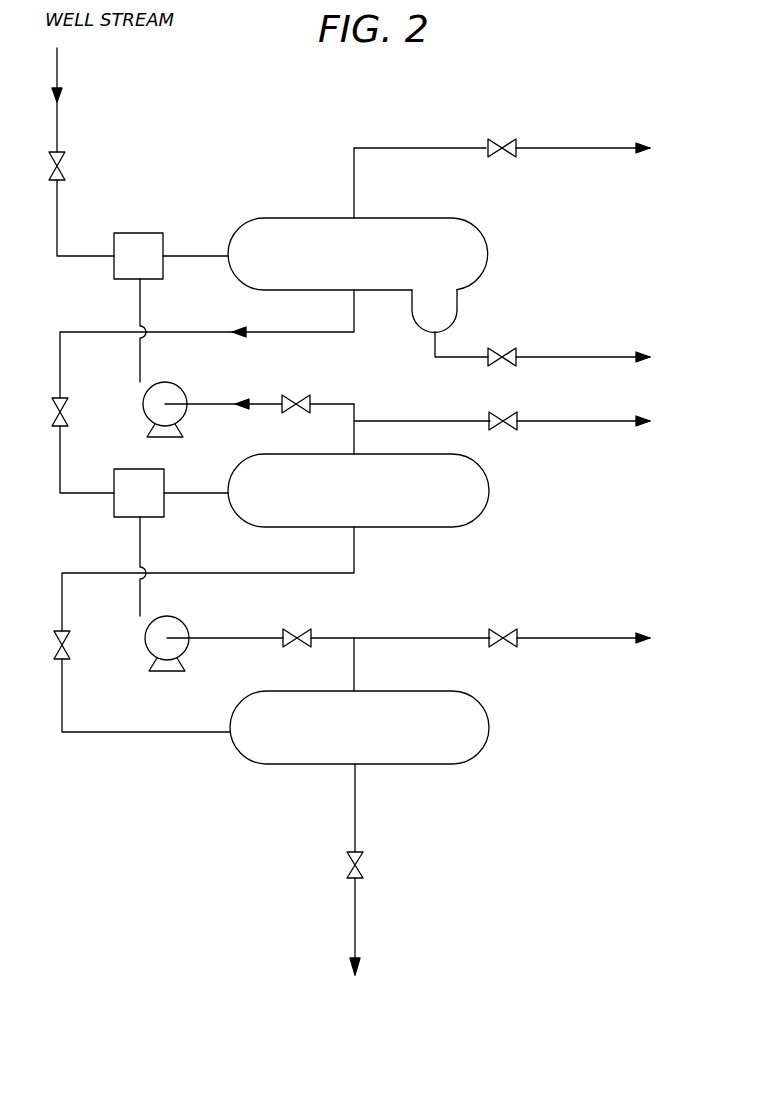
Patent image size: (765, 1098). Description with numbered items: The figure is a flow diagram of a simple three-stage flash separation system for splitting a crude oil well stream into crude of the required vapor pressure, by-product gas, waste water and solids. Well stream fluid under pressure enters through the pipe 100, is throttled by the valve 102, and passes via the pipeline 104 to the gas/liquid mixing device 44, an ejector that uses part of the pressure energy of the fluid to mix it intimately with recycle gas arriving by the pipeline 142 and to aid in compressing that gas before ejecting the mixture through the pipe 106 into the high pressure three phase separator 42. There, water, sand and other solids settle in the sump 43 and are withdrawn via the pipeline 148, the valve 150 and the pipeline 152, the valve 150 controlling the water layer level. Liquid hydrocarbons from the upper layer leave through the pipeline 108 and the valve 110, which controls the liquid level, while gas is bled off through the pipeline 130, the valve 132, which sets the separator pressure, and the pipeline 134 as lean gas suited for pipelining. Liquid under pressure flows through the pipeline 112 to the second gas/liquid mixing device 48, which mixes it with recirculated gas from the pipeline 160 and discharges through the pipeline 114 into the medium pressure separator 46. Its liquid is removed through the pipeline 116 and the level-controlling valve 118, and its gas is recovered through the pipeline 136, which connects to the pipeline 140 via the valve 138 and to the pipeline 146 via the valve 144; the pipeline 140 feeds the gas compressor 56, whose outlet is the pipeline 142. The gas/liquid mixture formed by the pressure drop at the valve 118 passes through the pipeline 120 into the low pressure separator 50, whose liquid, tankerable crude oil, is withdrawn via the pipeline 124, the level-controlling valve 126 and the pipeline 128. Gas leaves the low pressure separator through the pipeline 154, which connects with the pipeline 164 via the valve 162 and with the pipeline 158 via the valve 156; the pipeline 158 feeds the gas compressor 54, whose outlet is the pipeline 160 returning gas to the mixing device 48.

The pipe 100 is at (78, 100).
The valve 102 is at (66, 168).
The pipeline 104 is at (80, 231).
The gas/liquid mixing device 44 is at (140, 233).
The pipe 106 is at (191, 254).
The high pressure three phase separator 42 is at (296, 217).
The sump 43 is at (458, 305).
The pipeline 130 is at (372, 148).
The valve 132 is at (504, 140).
The pipeline 134 is at (588, 148).
The pipeline 148 is at (450, 351).
The valve 150 is at (505, 362).
The pipeline 152 is at (598, 357).
The pipeline 142 is at (141, 302).
The pipeline 108 is at (331, 334).
The valve 110 is at (68, 410).
The pipeline 112 is at (62, 486).
The gas/liquid mixing device 48 is at (133, 469).
The pipeline 114 is at (204, 498).
The medium pressure separator 46 is at (489, 494).
The pipeline 136 is at (422, 429).
The valve 144 is at (507, 429).
The pipeline 146 is at (600, 427).
The valve 138 is at (297, 412).
The pipeline 140 is at (221, 406).
The gas compressor 56 is at (176, 392).
The pipeline 116 is at (322, 572).
The valve 118 is at (55, 645).
The pipeline 120 is at (58, 716).
The pipeline 160 is at (140, 545).
The gas compressor 54 is at (180, 628).
The pipeline 158 is at (236, 640).
The valve 156 is at (298, 631).
The pipeline 154 is at (356, 671).
The valve 162 is at (506, 633).
The pipeline 164 is at (580, 638).
The low pressure separator 50 is at (490, 720).
The pipeline 124 is at (357, 807).
The valve 126 is at (365, 865).
The pipeline 128 is at (357, 922).